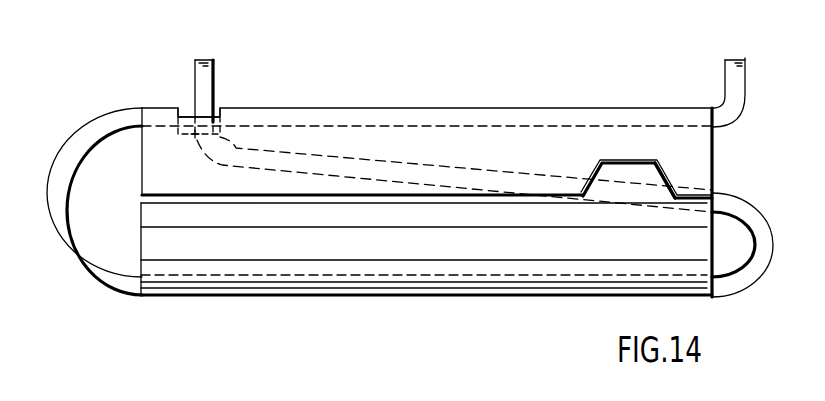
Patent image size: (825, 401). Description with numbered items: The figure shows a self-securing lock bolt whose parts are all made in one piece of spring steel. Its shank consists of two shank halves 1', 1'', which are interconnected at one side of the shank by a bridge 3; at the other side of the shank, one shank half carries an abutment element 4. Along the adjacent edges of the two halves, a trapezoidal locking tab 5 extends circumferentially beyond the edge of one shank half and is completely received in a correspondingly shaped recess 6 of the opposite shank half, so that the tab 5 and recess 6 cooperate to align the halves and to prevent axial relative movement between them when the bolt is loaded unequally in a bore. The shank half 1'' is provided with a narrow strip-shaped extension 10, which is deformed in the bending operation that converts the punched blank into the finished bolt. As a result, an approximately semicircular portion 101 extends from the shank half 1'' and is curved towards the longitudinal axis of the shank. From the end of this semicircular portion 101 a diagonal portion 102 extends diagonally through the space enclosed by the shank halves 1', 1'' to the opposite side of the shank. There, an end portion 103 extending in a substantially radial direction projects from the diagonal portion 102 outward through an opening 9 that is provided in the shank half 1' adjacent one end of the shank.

The shank half 1' is at (427, 179).
The shank half 1'' is at (426, 270).
The bridge 3 is at (70, 148).
The abutment element 4 is at (725, 80).
The locking tab 5 is at (670, 183).
The recess 6 is at (642, 163).
The opening 9 is at (180, 116).
The extension 10 is at (350, 146).
The semicircular portion 101 is at (758, 268).
The diagonal portion 102 is at (408, 172).
The end portion 103 is at (207, 92).